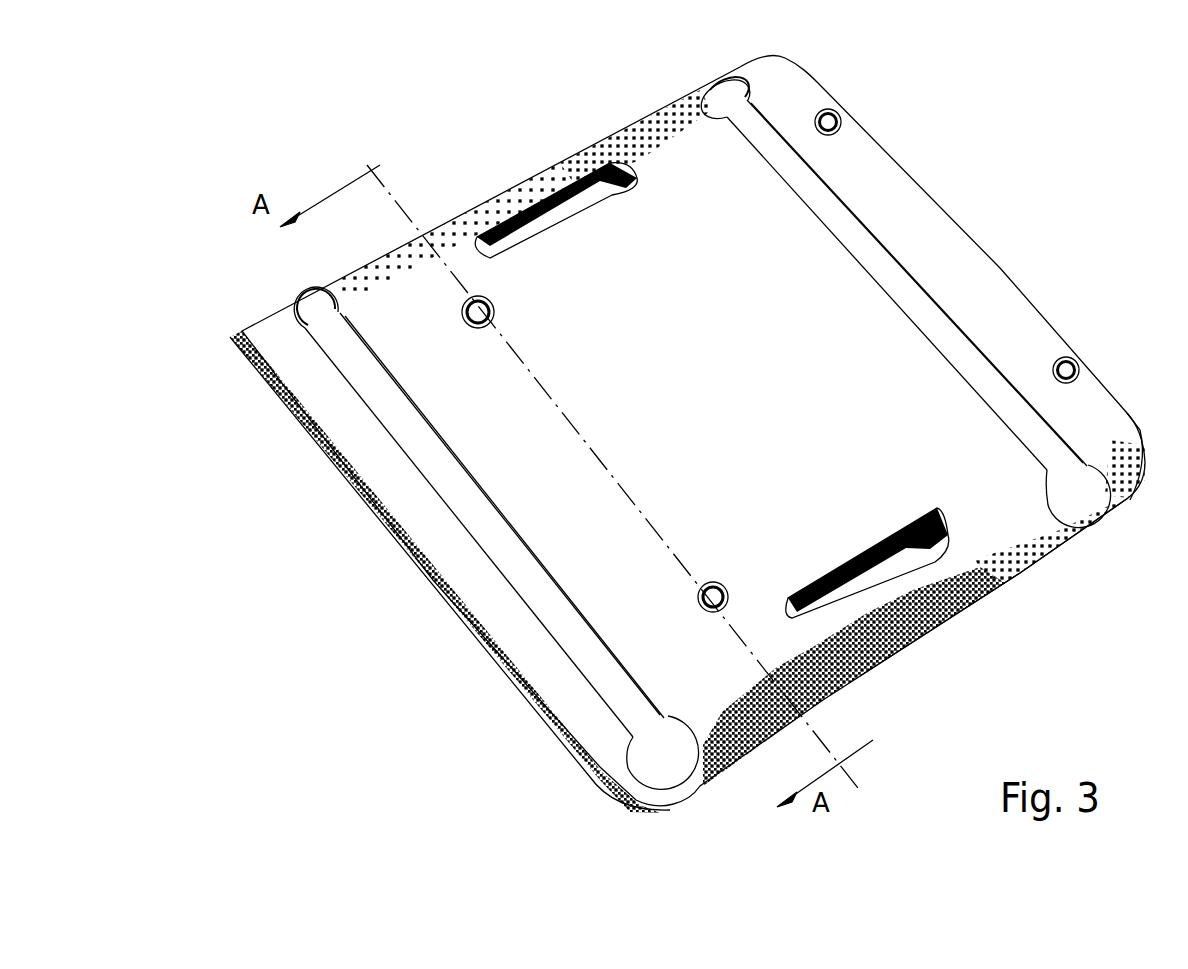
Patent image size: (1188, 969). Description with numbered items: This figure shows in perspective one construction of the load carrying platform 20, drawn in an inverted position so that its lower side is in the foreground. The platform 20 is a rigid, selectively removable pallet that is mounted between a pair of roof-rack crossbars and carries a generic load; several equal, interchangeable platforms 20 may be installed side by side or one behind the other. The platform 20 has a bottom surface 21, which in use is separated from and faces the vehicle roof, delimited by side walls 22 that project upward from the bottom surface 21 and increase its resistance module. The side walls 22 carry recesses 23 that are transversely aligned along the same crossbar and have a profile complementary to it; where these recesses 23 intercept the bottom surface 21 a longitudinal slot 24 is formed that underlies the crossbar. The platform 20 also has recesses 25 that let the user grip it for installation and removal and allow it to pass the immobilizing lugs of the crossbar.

The platform 20 is at (412, 592).
The bottom surface 21 is at (920, 398).
The side walls 22 is at (995, 572).
The recesses 23 is at (660, 766).
The longitudinal slot 24 is at (848, 243).
The recesses 25 is at (873, 587).